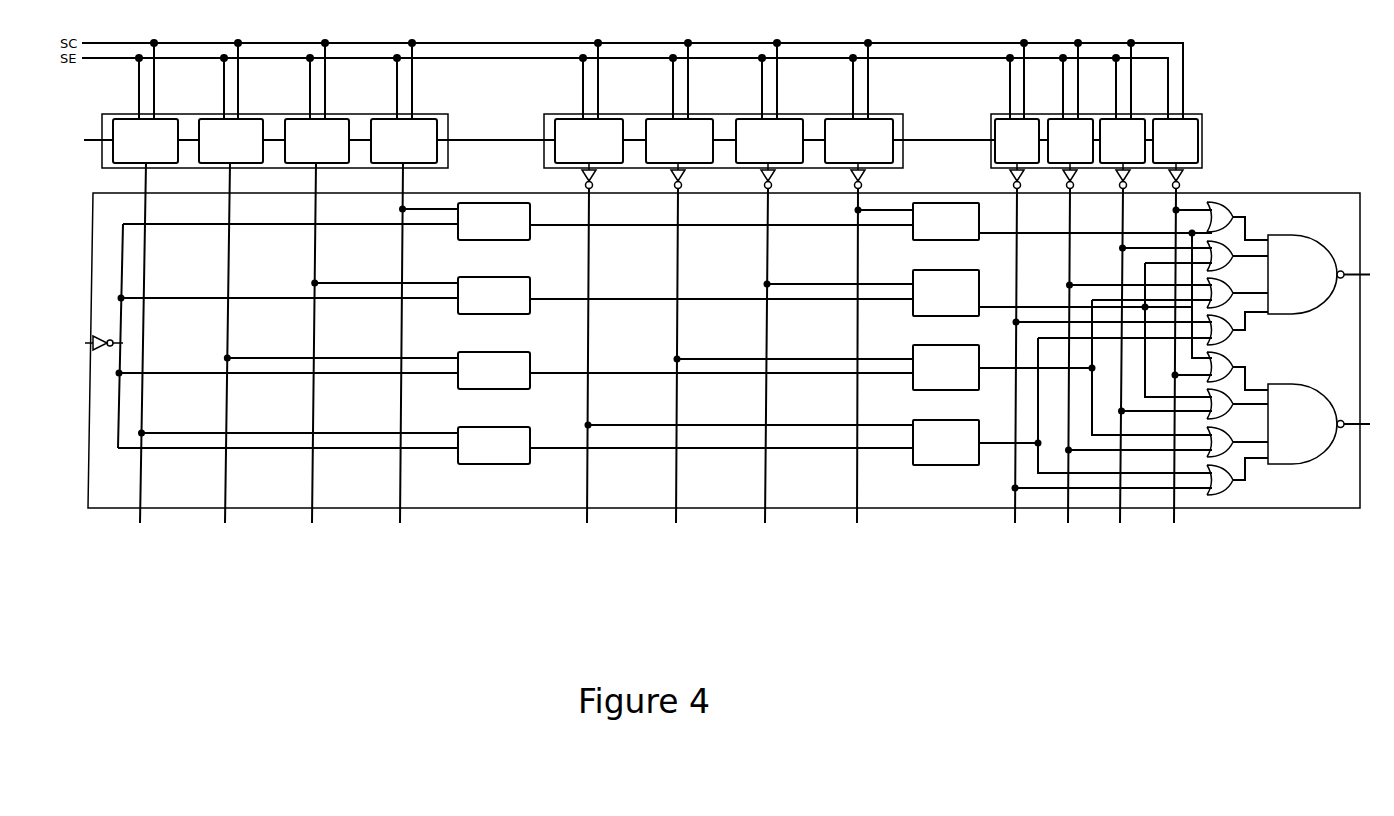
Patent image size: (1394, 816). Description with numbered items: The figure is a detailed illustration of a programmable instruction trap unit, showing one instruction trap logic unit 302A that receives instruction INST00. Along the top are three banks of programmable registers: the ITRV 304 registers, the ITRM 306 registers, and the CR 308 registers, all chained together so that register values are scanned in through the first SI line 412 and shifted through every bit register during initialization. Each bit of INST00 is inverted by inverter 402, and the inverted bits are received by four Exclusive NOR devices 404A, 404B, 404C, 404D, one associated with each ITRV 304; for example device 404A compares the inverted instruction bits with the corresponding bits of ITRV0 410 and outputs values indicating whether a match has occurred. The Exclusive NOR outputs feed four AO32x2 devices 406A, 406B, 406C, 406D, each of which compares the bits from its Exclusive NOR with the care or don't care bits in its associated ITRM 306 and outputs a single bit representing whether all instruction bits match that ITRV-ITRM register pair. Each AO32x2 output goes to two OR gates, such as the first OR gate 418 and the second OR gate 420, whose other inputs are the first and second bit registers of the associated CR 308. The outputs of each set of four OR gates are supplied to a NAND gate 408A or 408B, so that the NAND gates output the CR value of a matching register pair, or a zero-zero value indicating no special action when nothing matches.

The instruction trap logic unit 302A is at (1289, 185).
The ITRV 304 is at (437, 114).
The ITRM 306 is at (893, 114).
The CR 308 is at (1195, 114).
The inverter 402 is at (95, 350).
The Exclusive NOR device 404A is at (530, 236).
The Exclusive NOR device 404B is at (530, 310).
The Exclusive NOR device 404C is at (530, 385).
The Exclusive NOR device 404D is at (530, 460).
The AO32x2 device 406A is at (960, 240).
The AO32x2 device 406B is at (960, 316).
The AO32x2 device 406C is at (960, 390).
The AO32x2 device 406D is at (960, 465).
The NAND gate 408A is at (1326, 237).
The NAND gate 408B is at (1326, 386).
The ITRV0 410 is at (440, 152).
The SI line 412 is at (72, 150).
The first OR gate 418 is at (1236, 216).
The second OR gate 420 is at (1229, 358).